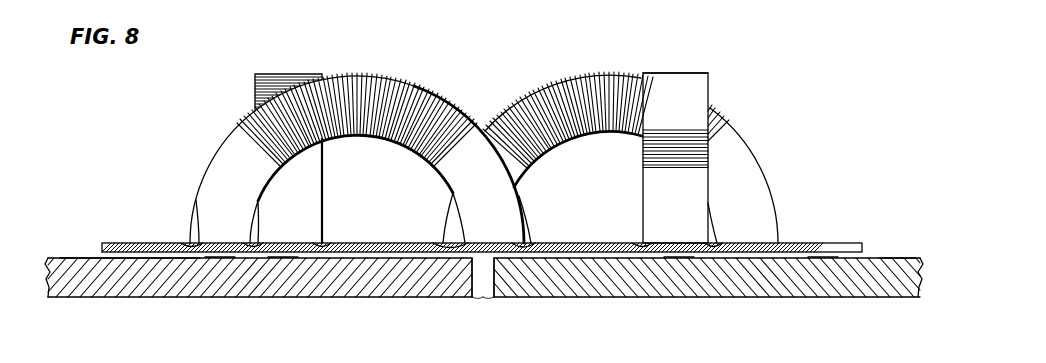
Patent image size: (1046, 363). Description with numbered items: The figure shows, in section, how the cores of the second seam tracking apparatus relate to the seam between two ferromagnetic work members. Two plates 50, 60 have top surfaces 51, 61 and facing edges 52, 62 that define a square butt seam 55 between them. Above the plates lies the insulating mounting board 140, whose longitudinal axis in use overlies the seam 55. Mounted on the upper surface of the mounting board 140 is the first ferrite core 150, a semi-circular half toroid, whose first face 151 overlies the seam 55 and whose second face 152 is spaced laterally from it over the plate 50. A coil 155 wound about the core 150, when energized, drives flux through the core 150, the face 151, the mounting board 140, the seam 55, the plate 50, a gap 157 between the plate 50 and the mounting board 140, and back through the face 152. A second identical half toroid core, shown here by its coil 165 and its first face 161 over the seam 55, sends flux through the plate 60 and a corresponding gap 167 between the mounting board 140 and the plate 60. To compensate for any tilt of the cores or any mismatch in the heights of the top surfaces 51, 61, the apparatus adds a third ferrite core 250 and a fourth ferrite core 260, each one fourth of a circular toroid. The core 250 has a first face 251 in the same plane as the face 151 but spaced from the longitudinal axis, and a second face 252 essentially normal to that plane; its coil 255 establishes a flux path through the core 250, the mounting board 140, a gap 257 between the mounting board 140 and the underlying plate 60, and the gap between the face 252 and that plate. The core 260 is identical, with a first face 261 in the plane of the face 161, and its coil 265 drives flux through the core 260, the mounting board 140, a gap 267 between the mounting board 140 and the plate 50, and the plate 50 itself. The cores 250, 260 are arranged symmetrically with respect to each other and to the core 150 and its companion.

The plate 50 is at (117, 287).
The top surface 51 is at (68, 257).
The facing edge 52 is at (472, 293).
The seam 55 is at (483, 302).
The plate 60 is at (764, 282).
The top surface 61 is at (895, 258).
The facing edge 62 is at (494, 293).
The mounting board 140 is at (128, 241).
The first ferrite core 150 is at (220, 188).
The first face 151 is at (527, 243).
The second face 152 is at (189, 243).
The coil 155 is at (371, 74).
The gap 157 is at (220, 257).
The first face 161 is at (434, 244).
The coil 165 is at (563, 74).
The gap 167 is at (823, 258).
The third ferrite core 250 is at (697, 188).
The first face 251 is at (638, 244).
The second face 252 is at (677, 93).
The coil 255 is at (695, 147).
The gap 257 is at (679, 258).
The fourth ferrite core 260 is at (302, 186).
The first face 261 is at (325, 242).
The coil 265 is at (255, 93).
The gap 267 is at (283, 259).